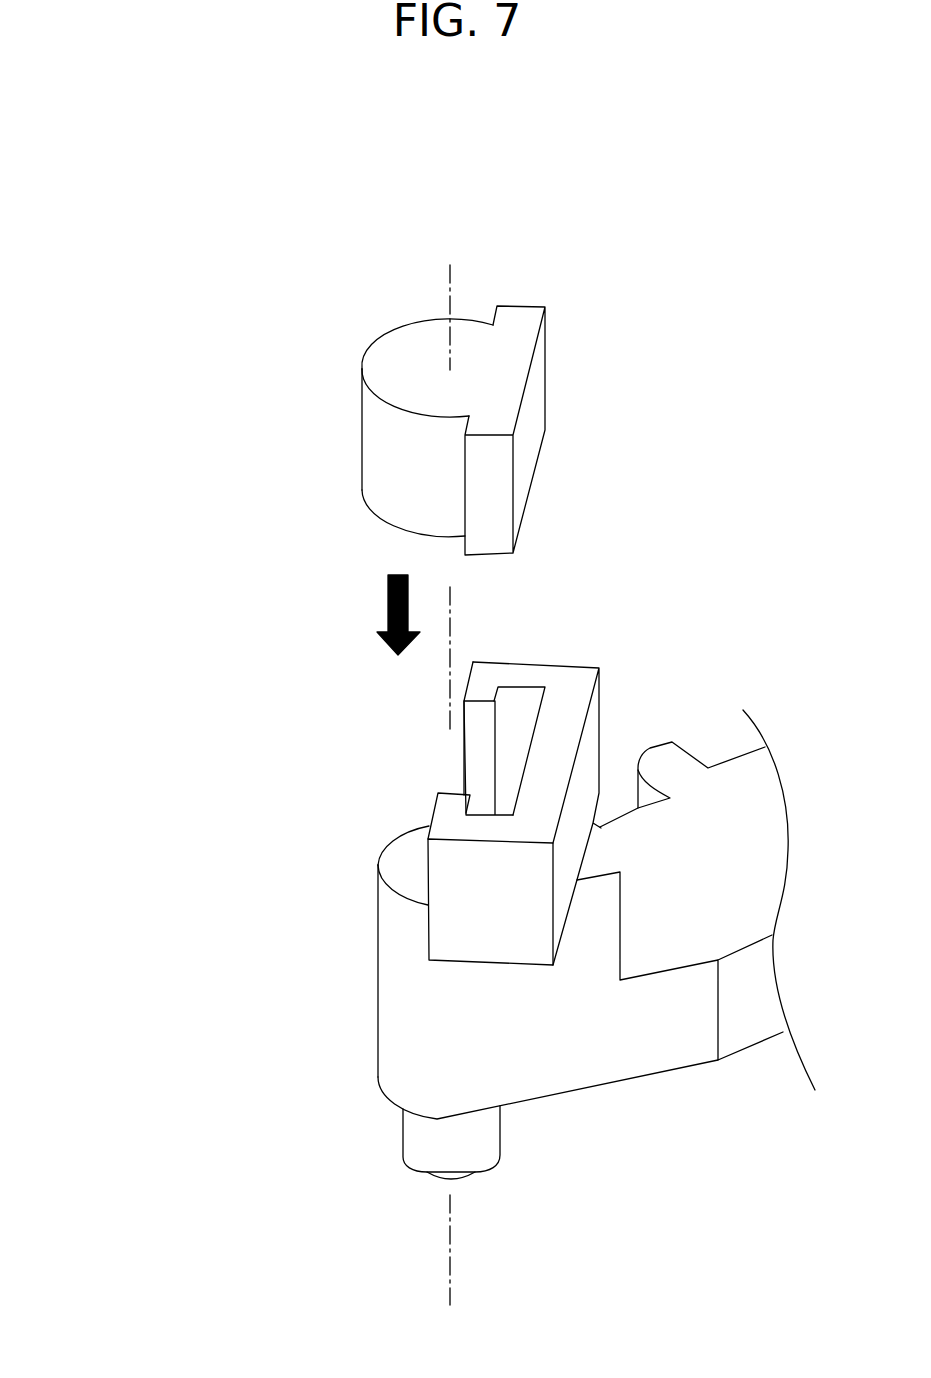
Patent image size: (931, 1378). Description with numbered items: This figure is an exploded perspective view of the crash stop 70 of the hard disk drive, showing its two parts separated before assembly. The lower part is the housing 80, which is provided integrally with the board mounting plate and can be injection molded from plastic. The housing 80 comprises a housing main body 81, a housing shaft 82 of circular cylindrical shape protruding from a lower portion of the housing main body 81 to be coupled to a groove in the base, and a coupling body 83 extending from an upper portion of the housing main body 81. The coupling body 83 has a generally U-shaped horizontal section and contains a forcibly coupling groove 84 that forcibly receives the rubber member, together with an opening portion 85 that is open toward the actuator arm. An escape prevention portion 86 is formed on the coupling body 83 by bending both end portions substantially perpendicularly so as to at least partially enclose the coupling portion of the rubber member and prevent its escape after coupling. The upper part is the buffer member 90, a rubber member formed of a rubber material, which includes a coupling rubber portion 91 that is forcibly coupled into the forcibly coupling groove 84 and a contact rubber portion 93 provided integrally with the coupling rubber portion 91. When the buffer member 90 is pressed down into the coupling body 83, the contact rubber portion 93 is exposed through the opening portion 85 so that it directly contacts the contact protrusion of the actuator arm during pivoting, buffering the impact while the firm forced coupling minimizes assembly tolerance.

The crash stop 70 is at (112, 330).
The housing 80 is at (360, 981).
The housing main body 81 is at (403, 1040).
The housing shaft 82 is at (425, 1140).
The coupling body 83 is at (622, 693).
The forcibly coupling groove 84 is at (520, 727).
The opening portion 85 is at (457, 770).
The escape prevention portion 86 is at (450, 805).
The buffer member 90 is at (512, 196).
The coupling rubber portion 91 is at (513, 365).
The contact rubber portion 93 is at (425, 358).